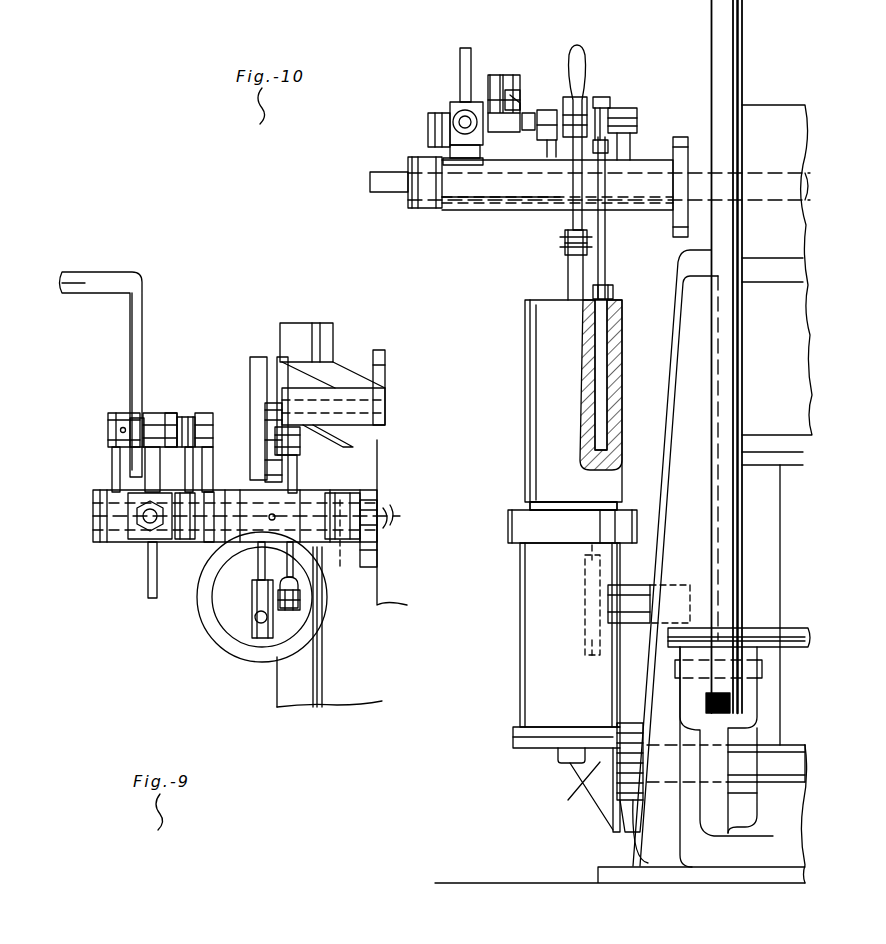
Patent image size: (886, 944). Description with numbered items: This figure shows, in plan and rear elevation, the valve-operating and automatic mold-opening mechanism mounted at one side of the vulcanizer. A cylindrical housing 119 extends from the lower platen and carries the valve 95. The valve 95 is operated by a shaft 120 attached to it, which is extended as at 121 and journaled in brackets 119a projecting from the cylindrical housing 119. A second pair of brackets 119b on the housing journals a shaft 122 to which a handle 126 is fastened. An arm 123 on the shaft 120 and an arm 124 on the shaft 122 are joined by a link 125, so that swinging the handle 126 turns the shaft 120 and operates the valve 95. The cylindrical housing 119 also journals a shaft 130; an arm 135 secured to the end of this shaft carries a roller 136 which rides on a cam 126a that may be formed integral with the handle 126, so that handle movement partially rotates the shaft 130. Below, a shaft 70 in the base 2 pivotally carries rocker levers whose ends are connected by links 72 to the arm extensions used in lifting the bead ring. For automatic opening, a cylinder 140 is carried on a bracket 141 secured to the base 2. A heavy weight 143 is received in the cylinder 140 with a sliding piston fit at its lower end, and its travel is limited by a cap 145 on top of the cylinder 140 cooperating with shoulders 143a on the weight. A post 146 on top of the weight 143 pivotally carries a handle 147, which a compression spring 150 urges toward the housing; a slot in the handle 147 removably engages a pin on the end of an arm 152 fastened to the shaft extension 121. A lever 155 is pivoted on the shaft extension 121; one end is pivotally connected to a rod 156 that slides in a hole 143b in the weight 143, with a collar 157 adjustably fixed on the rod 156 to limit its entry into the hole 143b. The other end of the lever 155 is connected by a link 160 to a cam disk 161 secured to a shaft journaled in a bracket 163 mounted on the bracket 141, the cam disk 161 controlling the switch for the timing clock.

In FIG. 10, the base 2 is at (668, 438).
In FIG. 10, the shaft 70 is at (776, 770).
In FIG. 10, the links 72 is at (718, 522).
In FIG. 10, the valve 95 is at (452, 110).
In FIG. 10, the cylindrical housing 119 is at (520, 204).
In FIG. 9, the cylindrical housing 119 is at (138, 544).
In FIG. 10, the brackets 119a is at (548, 112).
In FIG. 9, the brackets 119a is at (240, 498).
In FIG. 9, the brackets 119b is at (160, 418).
In FIG. 10, the shaft 120 is at (468, 90).
In FIG. 9, the shaft 120 is at (170, 545).
In FIG. 10, the shaft extension 121 is at (530, 112).
In FIG. 9, the shaft extension 121 is at (213, 544).
In FIG. 9, the shaft 122 is at (235, 430).
In FIG. 10, the arm 123 is at (520, 92).
In FIG. 9, the arm 123 is at (212, 500).
In FIG. 9, the arm 124 is at (222, 406).
In FIG. 10, the link 125 is at (503, 78).
In FIG. 9, the link 125 is at (185, 495).
In FIG. 10, the handle 126 is at (388, 190).
In FIG. 9, the handle 126 is at (142, 320).
In FIG. 9, the cam 126a is at (130, 472).
In FIG. 10, the shaft 130 is at (545, 203).
In FIG. 9, the shaft 130 is at (375, 530).
In FIG. 9, the arm 135 is at (112, 465).
In FIG. 9, the roller 136 is at (148, 412).
In FIG. 10, the cylinder 140 is at (538, 655).
In FIG. 10, the bracket 141 is at (568, 790).
In FIG. 10, the weight 143 is at (540, 438).
In FIG. 10, the shoulders 143a is at (525, 505).
In FIG. 10, the hole 143b is at (603, 428).
In FIG. 10, the cap 145 is at (530, 525).
In FIG. 10, the post 146 is at (572, 276).
In FIG. 10, the handle 147 is at (580, 52).
In FIG. 9, the handle 147 is at (253, 620).
In FIG. 10, the compression spring 150 is at (588, 247).
In FIG. 10, the arm 152 is at (590, 107).
In FIG. 9, the arm 152 is at (258, 570).
In FIG. 10, the lever 155 is at (612, 95).
In FIG. 9, the lever 155 is at (298, 570).
In FIG. 10, the rod 156 is at (605, 265).
In FIG. 10, the collar 157 is at (612, 290).
In FIG. 9, the collar 157 is at (303, 605).
In FIG. 9, the link 160 is at (315, 462).
In FIG. 10, the cam disk 161 is at (585, 606).
In FIG. 9, the cam disk 161 is at (278, 390).
In FIG. 10, the bracket 163 is at (635, 595).